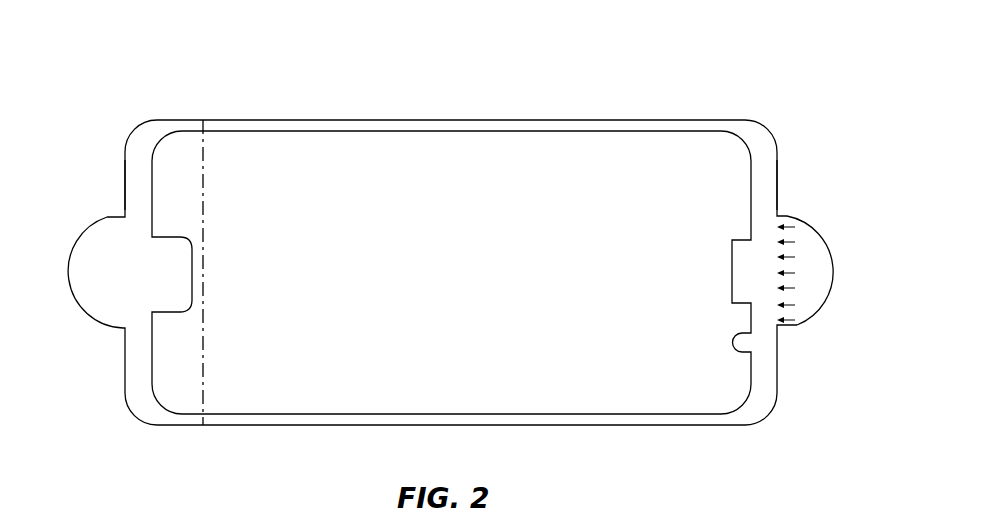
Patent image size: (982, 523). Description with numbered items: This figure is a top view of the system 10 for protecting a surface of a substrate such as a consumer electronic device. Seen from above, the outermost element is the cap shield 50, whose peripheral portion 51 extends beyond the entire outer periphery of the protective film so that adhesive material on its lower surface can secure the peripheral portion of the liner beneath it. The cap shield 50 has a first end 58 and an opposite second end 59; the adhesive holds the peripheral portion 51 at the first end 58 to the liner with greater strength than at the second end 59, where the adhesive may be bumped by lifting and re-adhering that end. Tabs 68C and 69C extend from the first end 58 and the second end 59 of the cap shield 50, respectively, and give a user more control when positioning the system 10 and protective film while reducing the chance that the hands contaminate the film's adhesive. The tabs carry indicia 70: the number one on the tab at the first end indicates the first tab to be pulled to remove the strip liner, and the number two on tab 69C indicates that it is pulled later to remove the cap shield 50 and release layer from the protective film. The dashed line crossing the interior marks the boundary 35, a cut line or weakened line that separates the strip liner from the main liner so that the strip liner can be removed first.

The system 10 is at (124, 52).
The cap shield 50 is at (104, 140).
The peripheral portion 51 is at (148, 140).
The first end 58 is at (140, 172).
The second end 59 is at (764, 185).
The tab 68C is at (108, 226).
The tab 69C is at (820, 255).
The indicia 70 is at (800, 333).
The boundary 35 is at (203, 396).